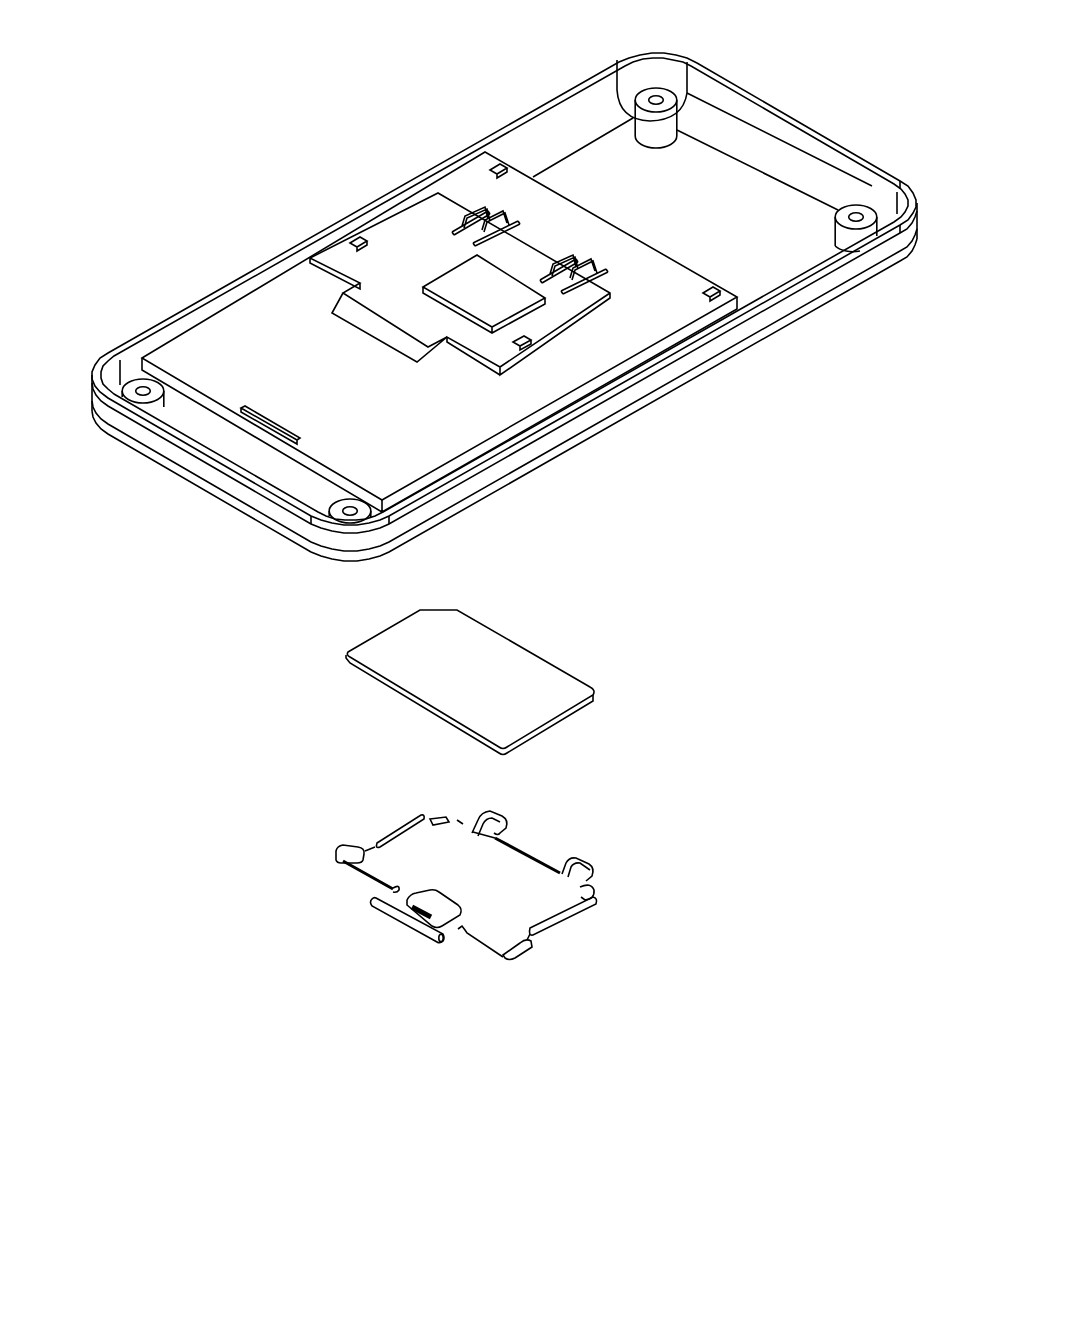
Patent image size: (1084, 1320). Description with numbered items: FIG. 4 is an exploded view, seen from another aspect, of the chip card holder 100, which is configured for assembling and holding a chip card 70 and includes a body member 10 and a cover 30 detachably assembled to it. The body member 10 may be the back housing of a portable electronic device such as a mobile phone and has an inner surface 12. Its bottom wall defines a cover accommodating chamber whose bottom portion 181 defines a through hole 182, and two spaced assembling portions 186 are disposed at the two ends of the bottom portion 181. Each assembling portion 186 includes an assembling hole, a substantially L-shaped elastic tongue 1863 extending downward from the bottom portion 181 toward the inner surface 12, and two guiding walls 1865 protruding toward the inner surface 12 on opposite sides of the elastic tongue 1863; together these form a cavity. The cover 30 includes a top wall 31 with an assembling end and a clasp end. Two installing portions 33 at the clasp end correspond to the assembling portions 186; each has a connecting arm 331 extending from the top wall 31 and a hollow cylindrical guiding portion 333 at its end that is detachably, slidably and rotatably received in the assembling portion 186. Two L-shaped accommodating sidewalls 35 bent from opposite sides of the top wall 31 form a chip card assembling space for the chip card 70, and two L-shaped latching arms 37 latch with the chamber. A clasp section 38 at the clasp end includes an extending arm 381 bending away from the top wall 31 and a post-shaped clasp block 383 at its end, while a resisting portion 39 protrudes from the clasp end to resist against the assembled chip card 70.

The chip card holder 100 is at (280, 75).
The body member 10 is at (822, 98).
The inner surface 12 is at (440, 427).
The bottom portion 181 is at (398, 242).
The through hole 182 is at (507, 303).
The assembling portion 186 is at (512, 60).
The guiding wall 1865 is at (477, 207).
The elastic tongue 1863 is at (493, 213).
The chip card 70 is at (513, 680).
The cover 30 is at (590, 810).
The top wall 31 is at (495, 917).
The installing portion 33 is at (710, 812).
The guiding portion 333 is at (587, 867).
The connecting arm 331 is at (587, 885).
The accommodating sidewall 35 is at (573, 918).
The latching arm 37 is at (515, 960).
The clasp section 38 is at (258, 875).
The extending arm 381 is at (357, 877).
The clasp block 383 is at (375, 905).
The resisting portion 39 is at (413, 917).